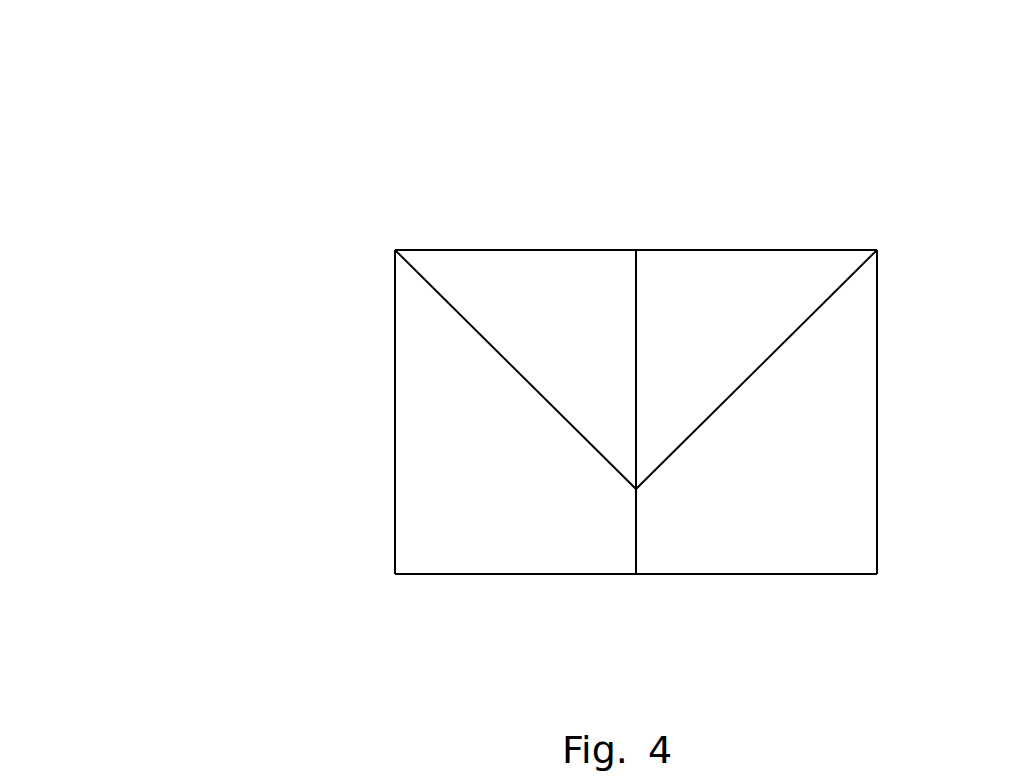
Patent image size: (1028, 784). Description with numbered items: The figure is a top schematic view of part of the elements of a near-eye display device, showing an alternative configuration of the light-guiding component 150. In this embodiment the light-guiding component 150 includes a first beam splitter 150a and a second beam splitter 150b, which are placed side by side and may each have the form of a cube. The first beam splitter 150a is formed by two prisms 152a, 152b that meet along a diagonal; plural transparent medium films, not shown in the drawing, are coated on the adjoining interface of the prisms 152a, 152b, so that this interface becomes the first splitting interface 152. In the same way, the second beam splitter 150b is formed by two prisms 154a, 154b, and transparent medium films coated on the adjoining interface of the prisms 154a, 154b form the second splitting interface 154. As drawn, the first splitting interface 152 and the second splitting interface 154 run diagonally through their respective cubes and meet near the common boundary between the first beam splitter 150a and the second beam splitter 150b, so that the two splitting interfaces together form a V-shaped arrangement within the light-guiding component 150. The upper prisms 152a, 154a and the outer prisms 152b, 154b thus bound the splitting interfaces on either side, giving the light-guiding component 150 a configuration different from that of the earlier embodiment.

The light-guiding component 150 is at (93, 59).
The first beam splitter 150a is at (512, 154).
The second beam splitter 150b is at (1013, 154).
The first splitting interface 152 is at (515, 313).
The prism 152a is at (533, 278).
The prism 152b is at (432, 345).
The second splitting interface 154 is at (756, 313).
The prism 154a is at (739, 278).
The prism 154b is at (840, 345).